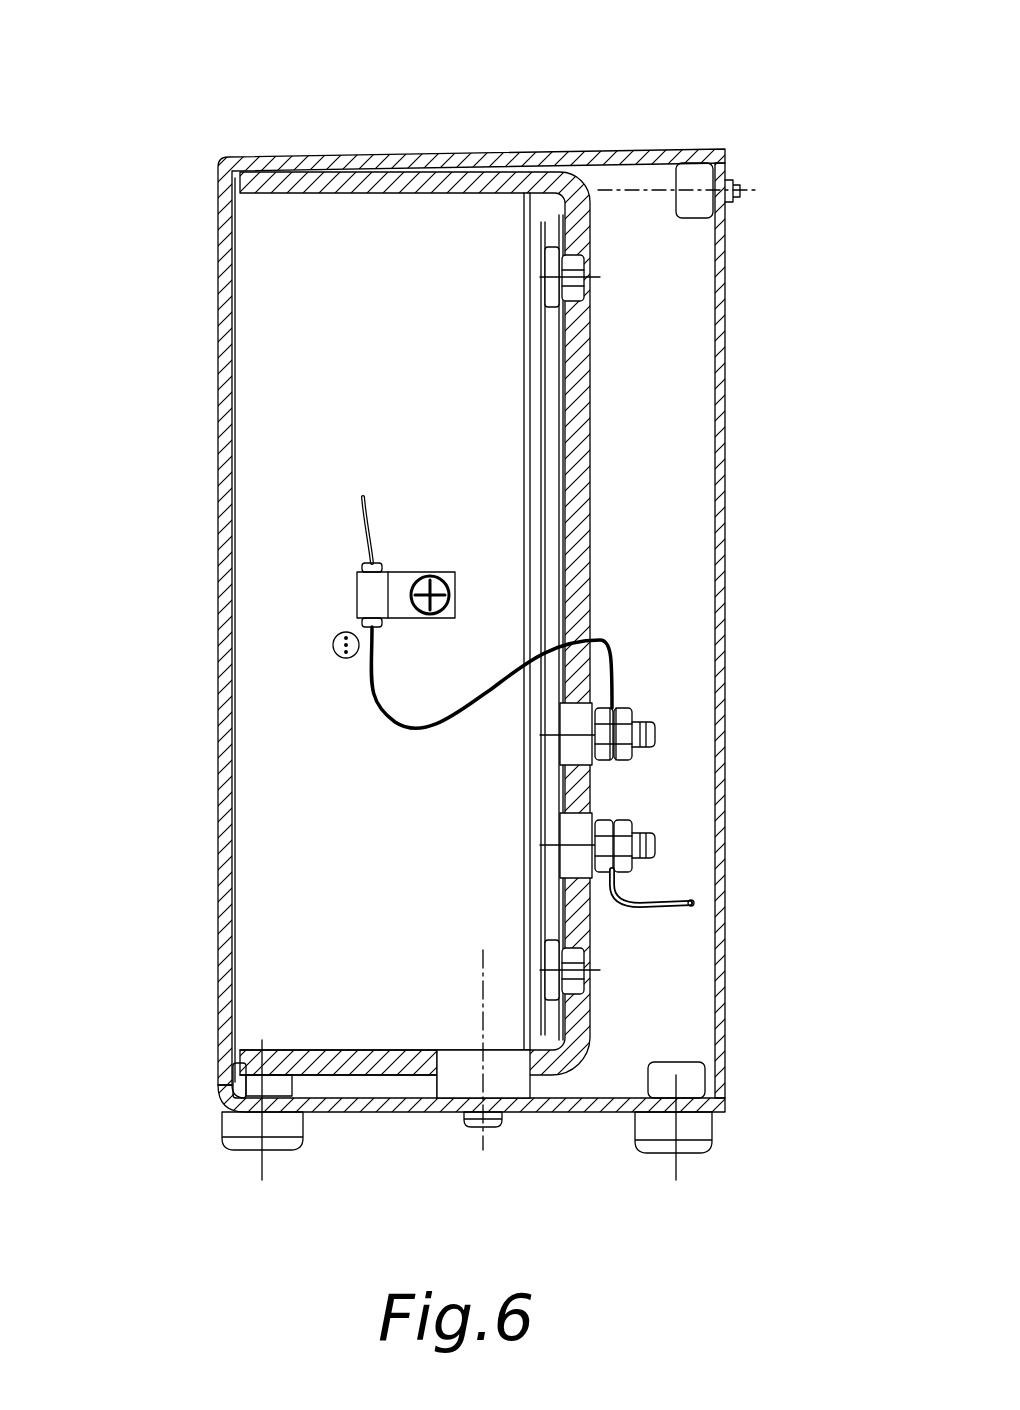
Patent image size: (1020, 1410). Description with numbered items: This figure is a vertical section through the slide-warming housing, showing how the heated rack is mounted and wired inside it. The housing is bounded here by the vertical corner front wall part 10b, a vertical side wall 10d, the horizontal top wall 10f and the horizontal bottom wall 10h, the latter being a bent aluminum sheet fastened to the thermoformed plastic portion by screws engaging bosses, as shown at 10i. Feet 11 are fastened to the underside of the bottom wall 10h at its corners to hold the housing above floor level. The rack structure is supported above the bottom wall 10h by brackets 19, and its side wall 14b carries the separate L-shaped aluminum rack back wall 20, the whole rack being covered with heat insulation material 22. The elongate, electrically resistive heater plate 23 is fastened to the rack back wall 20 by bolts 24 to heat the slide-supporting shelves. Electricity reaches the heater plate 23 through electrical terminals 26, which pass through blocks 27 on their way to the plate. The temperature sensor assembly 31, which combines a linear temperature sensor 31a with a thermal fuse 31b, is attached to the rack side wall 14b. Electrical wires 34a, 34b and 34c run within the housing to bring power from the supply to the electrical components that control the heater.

The corner front wall part 10b is at (218, 292).
The side wall 10d is at (683, 253).
The top wall 10f is at (725, 558).
The bottom wall 10h is at (368, 1115).
The screw fastening 10i is at (738, 190).
The feet 11 is at (248, 1158).
The rack side wall 14b is at (430, 333).
The brackets 19 is at (508, 1112).
The rack back wall 20 is at (545, 416).
The heat insulation material 22 is at (588, 225).
The heater plate 23 is at (553, 537).
The bolts 24 is at (582, 280).
The electrical terminals 26 is at (655, 735).
The blocks 27 is at (615, 692).
The temperature sensor assembly 31 is at (330, 572).
The linear temperature sensor 31a is at (333, 650).
The thermal fuse 31b is at (372, 600).
The electrical wire 34a is at (363, 497).
The electrical wire 34b is at (683, 910).
The lead wire 34c is at (615, 690).